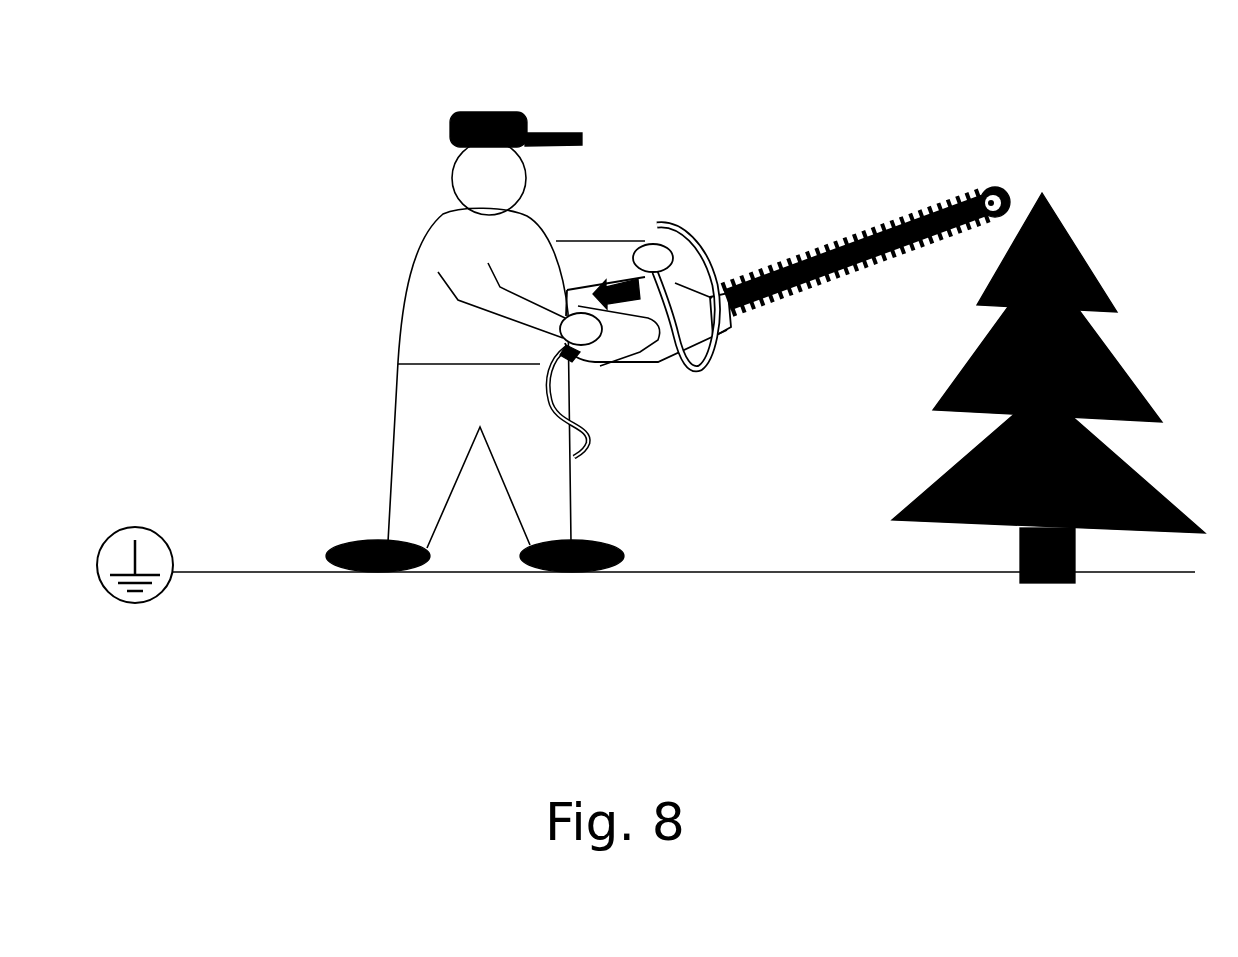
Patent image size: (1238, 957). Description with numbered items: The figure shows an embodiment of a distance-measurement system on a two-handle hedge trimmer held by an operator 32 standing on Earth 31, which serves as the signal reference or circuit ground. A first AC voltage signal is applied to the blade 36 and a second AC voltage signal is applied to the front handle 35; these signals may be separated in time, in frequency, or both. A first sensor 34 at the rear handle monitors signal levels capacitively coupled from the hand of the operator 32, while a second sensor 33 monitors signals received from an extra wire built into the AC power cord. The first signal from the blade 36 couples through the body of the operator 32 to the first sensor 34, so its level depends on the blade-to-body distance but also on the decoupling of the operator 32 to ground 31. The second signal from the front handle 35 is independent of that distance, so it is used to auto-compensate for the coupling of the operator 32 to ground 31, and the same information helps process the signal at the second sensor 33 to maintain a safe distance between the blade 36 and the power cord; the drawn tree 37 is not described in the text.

The Earth 31 is at (214, 560).
The operator 32 is at (396, 274).
The second sensor 33 is at (580, 358).
The first sensor 34 is at (598, 294).
The front handle 35 is at (663, 220).
The blade 36 is at (1002, 190).
The tree 37 is at (1124, 360).